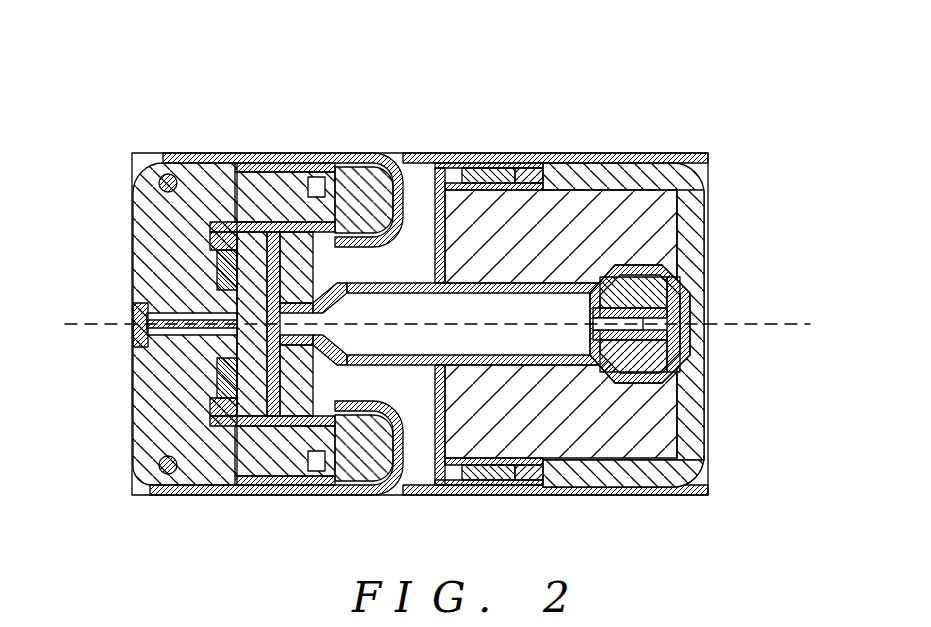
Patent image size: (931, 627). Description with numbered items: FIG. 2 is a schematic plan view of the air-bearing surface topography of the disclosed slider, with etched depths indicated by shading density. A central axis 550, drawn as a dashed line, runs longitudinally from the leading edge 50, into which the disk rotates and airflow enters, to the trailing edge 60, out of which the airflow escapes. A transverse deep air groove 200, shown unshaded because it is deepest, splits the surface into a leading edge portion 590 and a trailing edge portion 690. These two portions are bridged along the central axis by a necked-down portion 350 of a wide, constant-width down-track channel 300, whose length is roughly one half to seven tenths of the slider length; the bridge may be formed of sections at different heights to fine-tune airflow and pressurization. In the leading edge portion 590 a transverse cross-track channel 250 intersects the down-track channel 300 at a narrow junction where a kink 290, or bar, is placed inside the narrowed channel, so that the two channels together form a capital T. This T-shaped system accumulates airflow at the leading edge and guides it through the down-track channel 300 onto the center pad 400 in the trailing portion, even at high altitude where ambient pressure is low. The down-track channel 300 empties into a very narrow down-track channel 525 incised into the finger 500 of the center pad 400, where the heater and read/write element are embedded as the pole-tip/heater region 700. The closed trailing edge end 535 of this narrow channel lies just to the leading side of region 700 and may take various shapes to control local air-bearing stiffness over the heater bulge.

The leading edge 50 is at (132, 213).
The trailing edge 60 is at (707, 198).
The transverse deep air groove 200 is at (418, 453).
The cross-track channel 250 is at (216, 218).
The kink 290 is at (270, 328).
The wide down-track channel 300 is at (410, 322).
The necked-down portion 350 is at (300, 328).
The center pad 400 is at (637, 296).
The finger 500 is at (580, 250).
The narrow down-track channel 525 is at (617, 268).
The closed trailing edge end 535 is at (705, 350).
The central axis 550 is at (75, 323).
The leading edge portion 590 is at (252, 100).
The trailing edge portion 690 is at (543, 100).
The pole-tip/heater region 700 is at (707, 309).